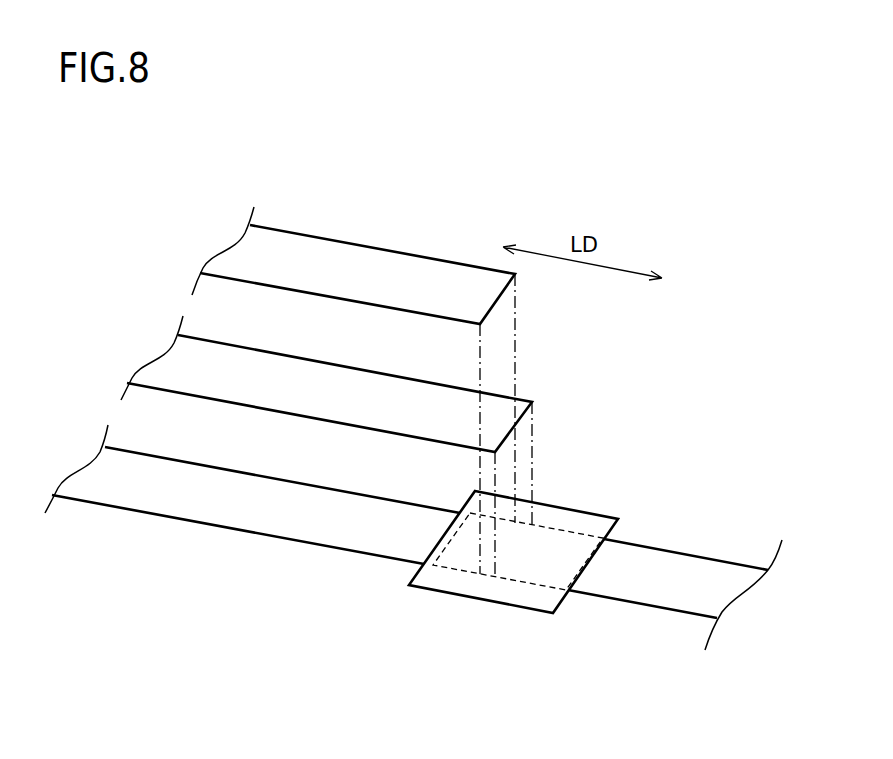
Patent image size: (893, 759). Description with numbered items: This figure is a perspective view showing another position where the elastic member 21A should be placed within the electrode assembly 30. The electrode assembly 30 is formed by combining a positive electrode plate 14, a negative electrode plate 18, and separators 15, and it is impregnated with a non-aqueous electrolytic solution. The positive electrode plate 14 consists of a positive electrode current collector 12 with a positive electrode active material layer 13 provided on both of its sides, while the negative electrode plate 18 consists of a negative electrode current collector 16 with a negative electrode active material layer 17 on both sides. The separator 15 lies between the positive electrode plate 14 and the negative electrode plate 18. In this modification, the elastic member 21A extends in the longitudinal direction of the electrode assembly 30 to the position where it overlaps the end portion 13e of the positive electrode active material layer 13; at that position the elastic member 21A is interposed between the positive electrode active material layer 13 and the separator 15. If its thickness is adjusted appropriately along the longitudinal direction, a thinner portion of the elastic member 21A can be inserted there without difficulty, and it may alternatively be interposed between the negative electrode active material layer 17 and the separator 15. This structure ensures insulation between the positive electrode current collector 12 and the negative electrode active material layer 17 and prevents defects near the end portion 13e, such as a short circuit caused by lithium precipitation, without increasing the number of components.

The electrode assembly 30 is at (582, 156).
The negative electrode plate 18 is at (417, 270).
The negative electrode current collector 16 is at (353, 265).
The negative electrode active material layer 17 is at (353, 265).
The separator 15 is at (280, 400).
The positive electrode active material layer 13 is at (270, 517).
The positive electrode plate 14 is at (175, 533).
The positive electrode current collector 12 is at (647, 590).
The elastic member 21A is at (614, 506).
The end portion of the positive electrode active material layer 13e is at (445, 553).